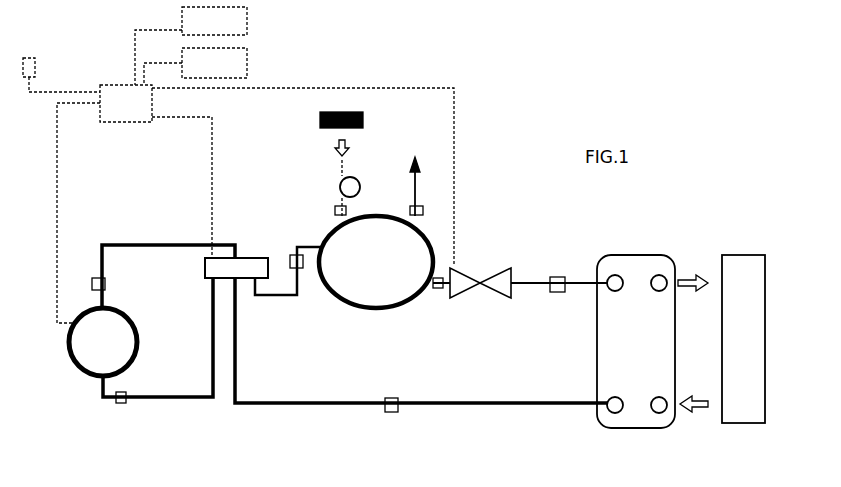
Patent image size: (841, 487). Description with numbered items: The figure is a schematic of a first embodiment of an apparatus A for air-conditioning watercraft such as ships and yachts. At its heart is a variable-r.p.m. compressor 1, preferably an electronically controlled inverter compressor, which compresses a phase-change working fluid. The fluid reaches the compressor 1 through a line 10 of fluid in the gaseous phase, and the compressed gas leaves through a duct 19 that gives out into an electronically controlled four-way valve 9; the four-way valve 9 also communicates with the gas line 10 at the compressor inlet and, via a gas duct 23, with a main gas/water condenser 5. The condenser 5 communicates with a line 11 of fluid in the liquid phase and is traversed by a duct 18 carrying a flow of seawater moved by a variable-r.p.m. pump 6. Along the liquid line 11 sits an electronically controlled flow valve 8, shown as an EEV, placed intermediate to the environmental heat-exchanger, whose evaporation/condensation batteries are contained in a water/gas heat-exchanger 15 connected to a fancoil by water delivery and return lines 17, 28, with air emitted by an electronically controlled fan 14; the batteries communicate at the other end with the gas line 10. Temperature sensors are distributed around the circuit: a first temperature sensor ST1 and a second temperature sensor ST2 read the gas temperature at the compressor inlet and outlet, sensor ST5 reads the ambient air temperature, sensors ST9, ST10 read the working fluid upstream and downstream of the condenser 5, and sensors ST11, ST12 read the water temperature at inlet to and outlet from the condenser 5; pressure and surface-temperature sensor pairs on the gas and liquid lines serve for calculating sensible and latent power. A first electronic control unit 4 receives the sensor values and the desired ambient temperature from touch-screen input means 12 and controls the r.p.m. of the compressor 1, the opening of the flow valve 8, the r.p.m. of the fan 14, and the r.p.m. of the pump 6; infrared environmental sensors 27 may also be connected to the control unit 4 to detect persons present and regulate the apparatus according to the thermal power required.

The variable-r.p.m. compressor 1 is at (80, 352).
The first electronic control unit 4 is at (133, 96).
The main gas/water condenser 5 is at (380, 291).
The variable-r.p.m. pump 6 is at (341, 185).
The electronically controlled flow valve 8 is at (480, 301).
The electronically controlled four-way valve 9 is at (247, 258).
The gas line 10 is at (338, 403).
The liquid line 11 is at (515, 282).
The input unit 12 is at (195, 66).
The electronically controlled fan 14 is at (743, 339).
The water/gas heat-exchanger 15 is at (636, 341).
The water delivery line 17 is at (686, 278).
The seawater duct 18 is at (320, 120).
The compressed gas outlet duct 19 is at (182, 400).
The gas duct 23 is at (291, 298).
The infrared environmental sensors 27 is at (191, 46).
The water return line 28 is at (693, 413).
The apparatus A is at (529, 96).
The electronic expansion valve EEV is at (480, 274).
The first temperature sensor ST1 is at (120, 403).
The second temperature sensor ST2 is at (105, 284).
The ambient temperature sensor ST5 is at (61, 75).
The upstream condenser temperature sensor ST9 is at (293, 255).
The downstream condenser temperature sensor ST10 is at (436, 291).
The condenser water inlet temperature sensor ST11 is at (335, 210).
The condenser water outlet temperature sensor ST12 is at (424, 209).